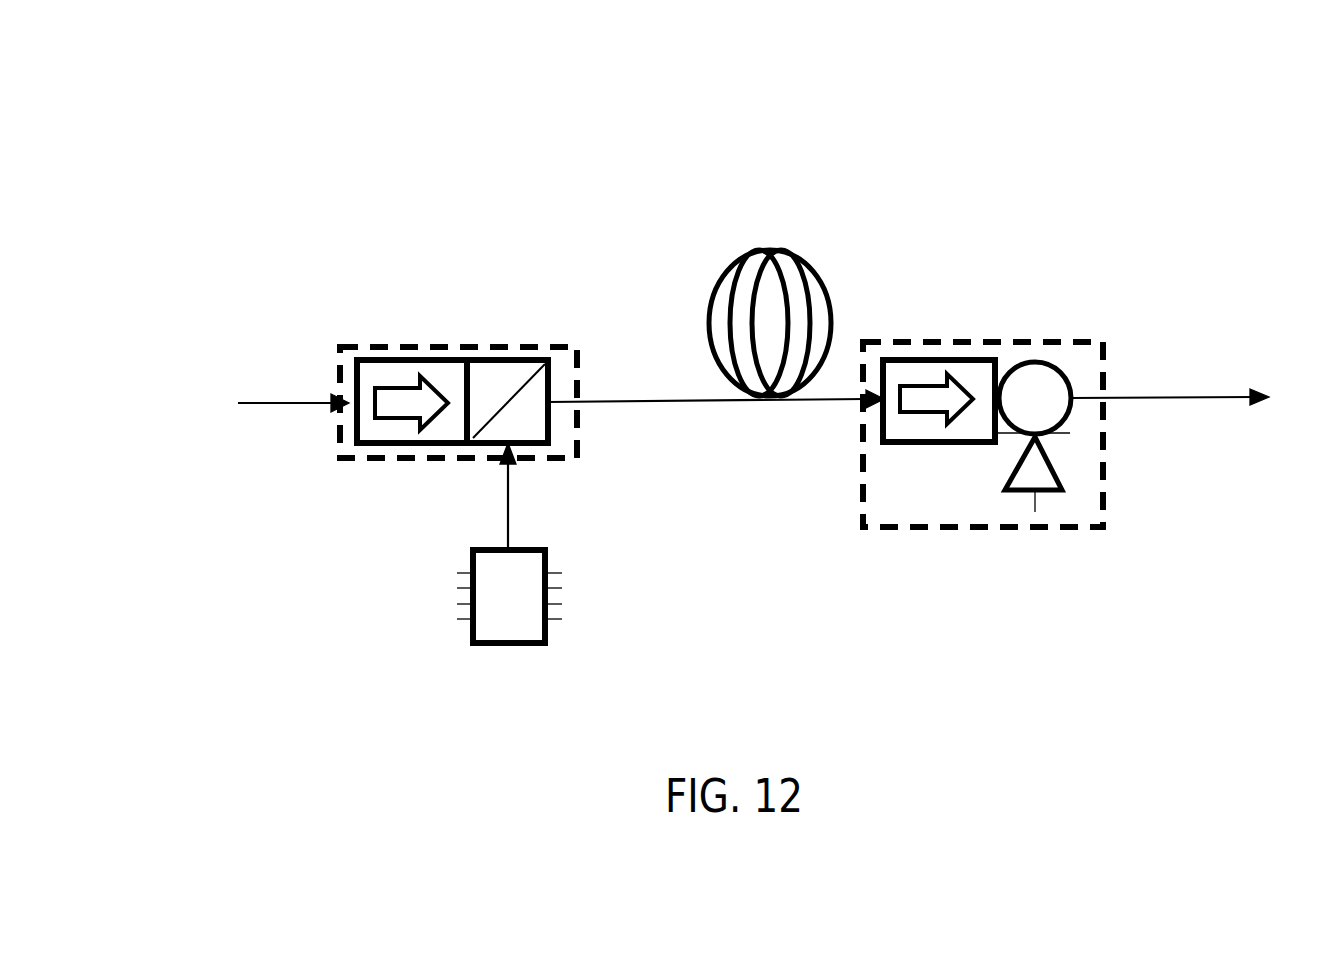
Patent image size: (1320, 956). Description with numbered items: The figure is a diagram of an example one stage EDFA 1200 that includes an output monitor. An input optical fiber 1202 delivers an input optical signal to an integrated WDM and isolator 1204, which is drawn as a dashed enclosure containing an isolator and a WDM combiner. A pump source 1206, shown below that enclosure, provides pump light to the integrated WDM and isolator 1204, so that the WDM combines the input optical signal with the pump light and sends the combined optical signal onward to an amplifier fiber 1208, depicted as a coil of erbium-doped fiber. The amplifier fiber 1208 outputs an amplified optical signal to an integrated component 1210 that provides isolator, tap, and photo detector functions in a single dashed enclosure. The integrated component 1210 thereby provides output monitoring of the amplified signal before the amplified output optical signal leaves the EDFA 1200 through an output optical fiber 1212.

The one stage EDFA 1200 is at (205, 103).
The input optical fiber 1202 is at (259, 388).
The integrated WDM and isolator 1204 is at (335, 338).
The pump source 1206 is at (477, 546).
The amplifier fiber 1208 is at (722, 249).
The integrated component 1210 is at (921, 334).
The output optical fiber 1212 is at (1199, 388).